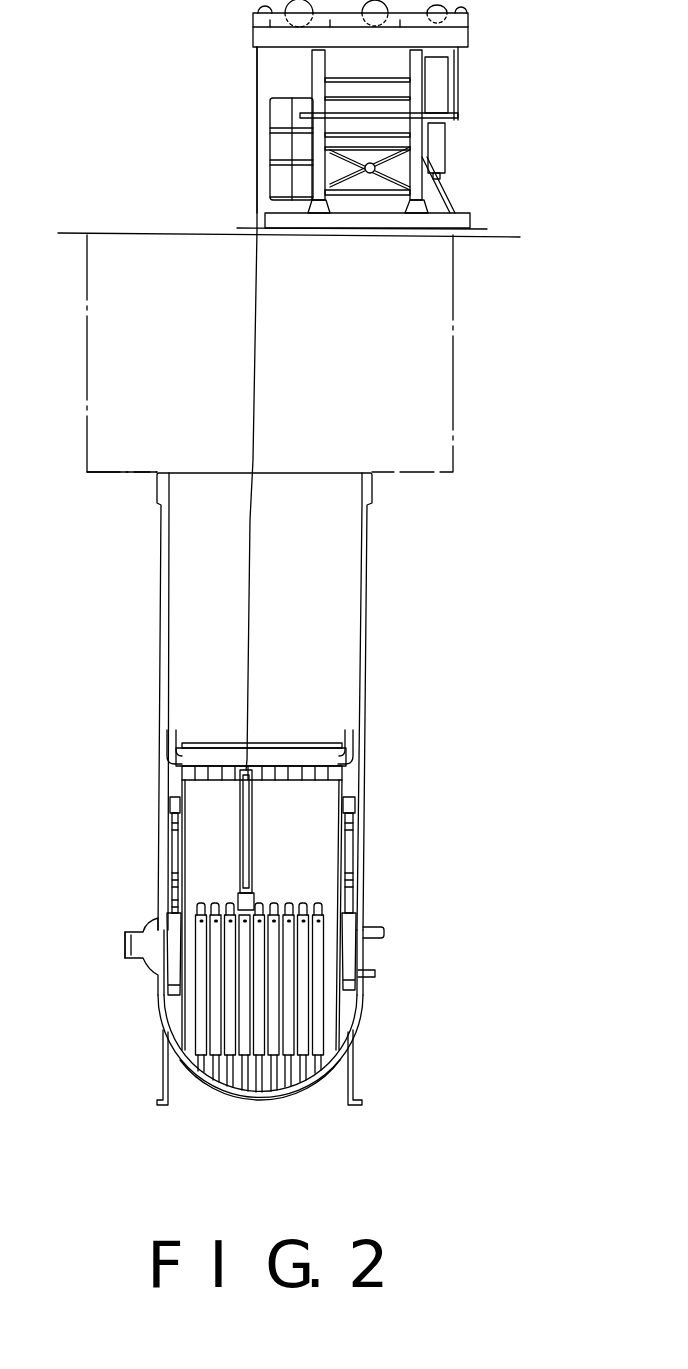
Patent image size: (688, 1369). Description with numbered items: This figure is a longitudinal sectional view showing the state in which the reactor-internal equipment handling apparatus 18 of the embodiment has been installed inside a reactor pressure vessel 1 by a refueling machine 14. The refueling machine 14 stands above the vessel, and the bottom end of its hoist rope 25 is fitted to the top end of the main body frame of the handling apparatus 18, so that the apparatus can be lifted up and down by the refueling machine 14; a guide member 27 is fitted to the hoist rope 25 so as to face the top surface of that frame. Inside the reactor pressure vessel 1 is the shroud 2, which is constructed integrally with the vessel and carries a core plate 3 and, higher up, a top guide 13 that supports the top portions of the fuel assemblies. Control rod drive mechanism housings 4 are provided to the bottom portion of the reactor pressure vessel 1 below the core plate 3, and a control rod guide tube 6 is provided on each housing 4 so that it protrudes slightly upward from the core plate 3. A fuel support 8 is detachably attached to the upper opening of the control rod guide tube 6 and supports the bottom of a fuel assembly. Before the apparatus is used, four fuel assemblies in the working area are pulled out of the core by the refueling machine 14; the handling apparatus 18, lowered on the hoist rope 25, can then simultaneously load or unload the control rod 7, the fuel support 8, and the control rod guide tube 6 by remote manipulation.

The reactor pressure vessel 1 is at (367, 585).
The shroud 2 is at (346, 866).
The core plate 3 is at (332, 916).
The control rod drive mechanism housing 4 is at (282, 1094).
The control rod guide tube 6 is at (200, 1012).
The control rod 7 is at (232, 912).
The fuel support 8 is at (187, 907).
The top guide 13 is at (310, 775).
The refueling machine 14 is at (462, 103).
The reactor-internal equipment handling apparatus 18 is at (250, 905).
The hoist rope 25 is at (257, 360).
The guide member 27 is at (237, 810).